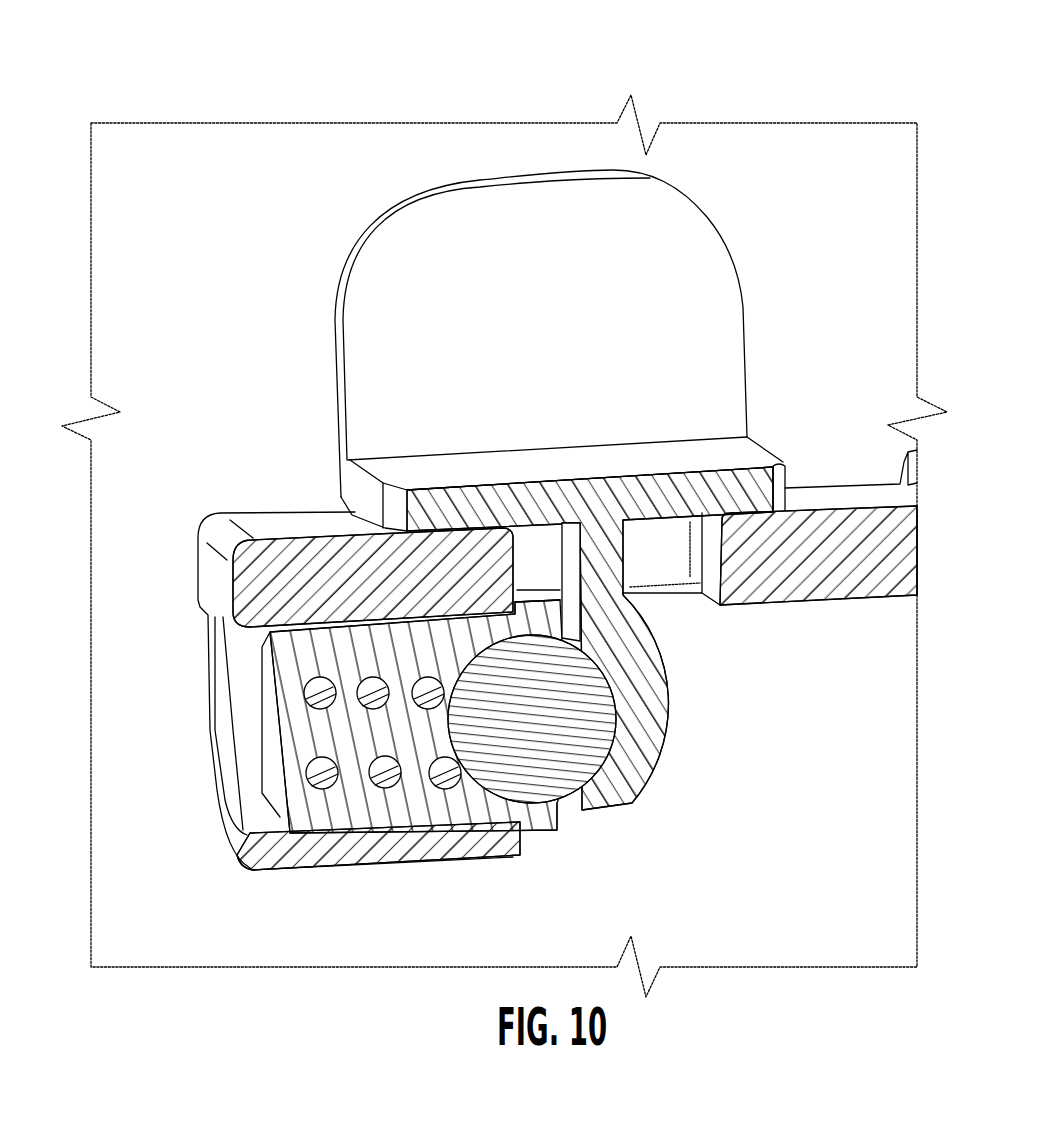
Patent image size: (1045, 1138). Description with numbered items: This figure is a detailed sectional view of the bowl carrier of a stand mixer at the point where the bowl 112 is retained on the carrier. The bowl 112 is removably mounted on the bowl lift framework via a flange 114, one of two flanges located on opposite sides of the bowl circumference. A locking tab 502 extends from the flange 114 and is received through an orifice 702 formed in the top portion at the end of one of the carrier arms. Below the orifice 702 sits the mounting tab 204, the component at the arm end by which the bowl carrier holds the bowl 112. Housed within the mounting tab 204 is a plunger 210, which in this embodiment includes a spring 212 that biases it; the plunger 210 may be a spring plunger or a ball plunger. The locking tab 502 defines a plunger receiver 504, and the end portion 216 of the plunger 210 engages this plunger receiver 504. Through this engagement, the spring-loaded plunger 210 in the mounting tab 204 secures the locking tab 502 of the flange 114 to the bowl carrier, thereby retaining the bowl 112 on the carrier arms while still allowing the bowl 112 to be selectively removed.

The bowl 112 is at (188, 163).
The flange 114 is at (700, 284).
The mounting tab 204 is at (253, 584).
The plunger 210 is at (490, 800).
The spring 212 is at (390, 777).
The end portion 216 is at (580, 760).
The locking tab 502 is at (607, 607).
The plunger receiver 504 is at (617, 713).
The orifice 702 is at (675, 542).